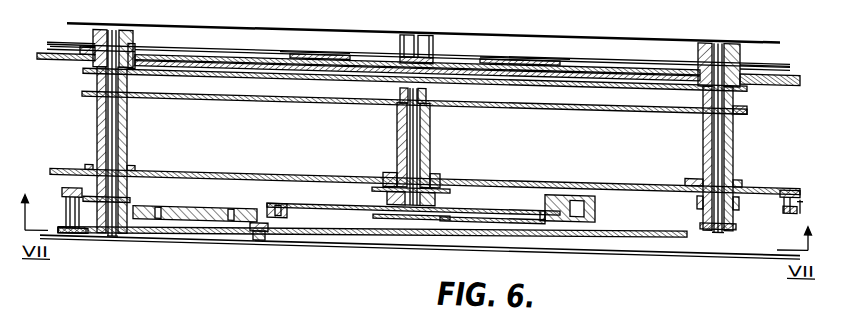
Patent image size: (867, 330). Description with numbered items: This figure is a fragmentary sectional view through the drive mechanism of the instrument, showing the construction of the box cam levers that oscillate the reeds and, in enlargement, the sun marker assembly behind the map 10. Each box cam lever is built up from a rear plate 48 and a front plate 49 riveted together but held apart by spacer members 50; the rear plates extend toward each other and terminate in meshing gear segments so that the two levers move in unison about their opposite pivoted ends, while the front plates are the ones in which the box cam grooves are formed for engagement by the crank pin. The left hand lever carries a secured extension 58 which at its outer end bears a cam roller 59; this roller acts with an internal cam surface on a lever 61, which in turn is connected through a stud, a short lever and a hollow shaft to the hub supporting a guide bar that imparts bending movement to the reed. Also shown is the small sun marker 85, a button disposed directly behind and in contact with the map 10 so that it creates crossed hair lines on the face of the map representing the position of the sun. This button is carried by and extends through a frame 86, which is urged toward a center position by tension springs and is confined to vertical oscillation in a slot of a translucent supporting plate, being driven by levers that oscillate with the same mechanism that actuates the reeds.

The map 10 is at (604, 0).
The rear plates 48 is at (217, 214).
The front plates 49 is at (165, 202).
The spacer members 50 is at (171, 210).
The extension 58 is at (440, 221).
The cam roller 59 is at (255, 228).
The lever 61 is at (142, 224).
The sun marker 85 is at (417, 22).
The frame 86 is at (440, 55).